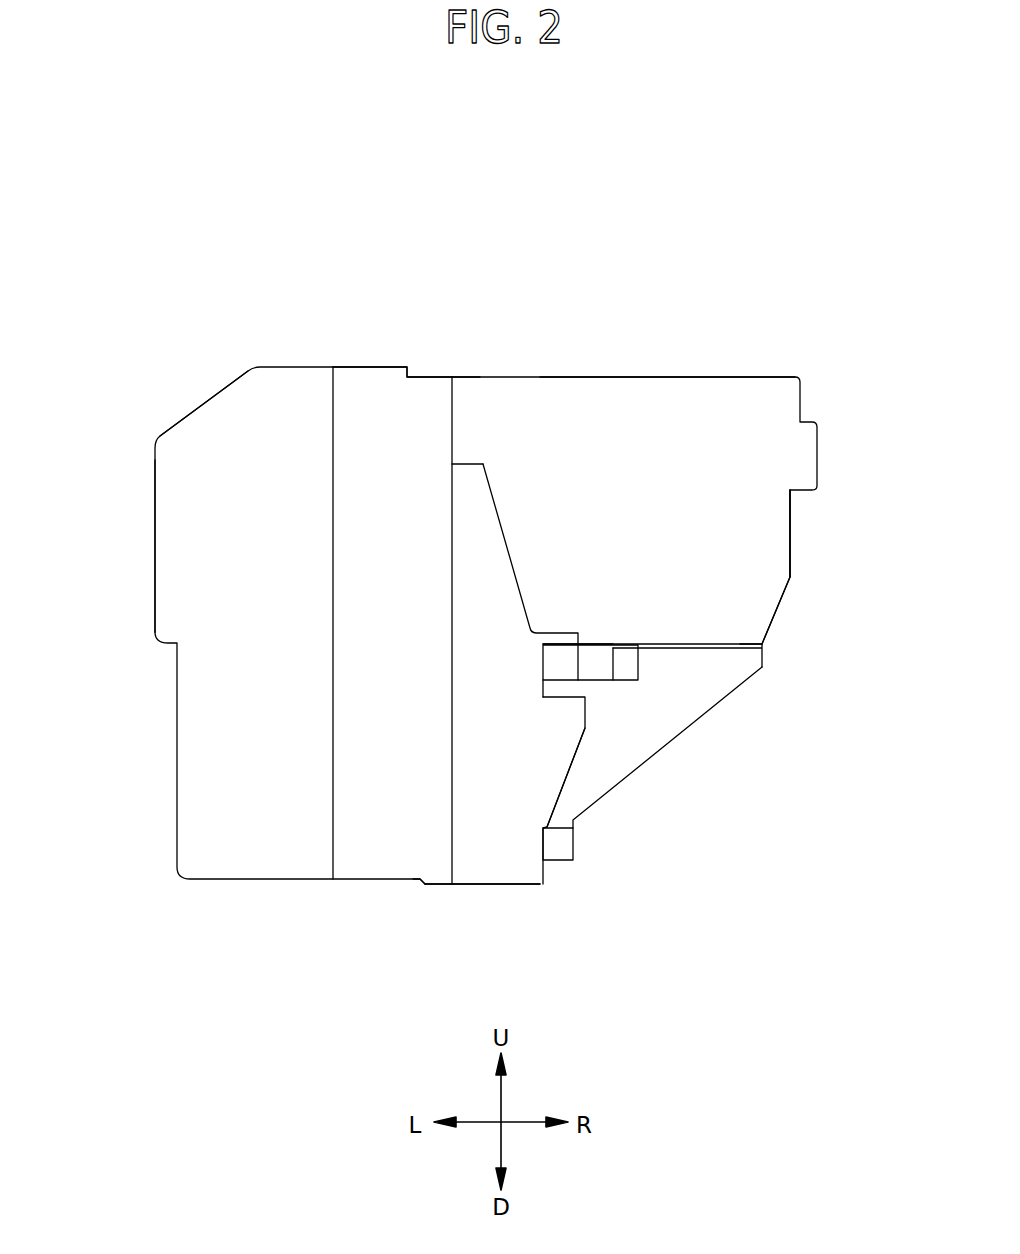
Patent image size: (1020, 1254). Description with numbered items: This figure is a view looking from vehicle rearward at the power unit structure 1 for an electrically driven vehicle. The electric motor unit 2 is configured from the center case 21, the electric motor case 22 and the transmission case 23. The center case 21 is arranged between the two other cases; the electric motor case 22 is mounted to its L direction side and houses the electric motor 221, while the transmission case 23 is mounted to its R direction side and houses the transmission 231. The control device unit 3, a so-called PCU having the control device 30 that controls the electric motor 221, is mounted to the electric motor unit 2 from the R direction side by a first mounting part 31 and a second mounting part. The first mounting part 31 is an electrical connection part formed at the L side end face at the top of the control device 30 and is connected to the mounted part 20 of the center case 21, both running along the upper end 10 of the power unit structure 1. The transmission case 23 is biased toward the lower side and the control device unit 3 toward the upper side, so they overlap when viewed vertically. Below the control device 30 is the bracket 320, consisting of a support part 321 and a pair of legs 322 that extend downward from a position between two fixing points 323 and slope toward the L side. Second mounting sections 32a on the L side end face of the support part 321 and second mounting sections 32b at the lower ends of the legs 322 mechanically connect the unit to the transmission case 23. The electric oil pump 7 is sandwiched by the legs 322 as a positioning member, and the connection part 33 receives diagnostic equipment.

The power unit structure 1 is at (603, 200).
The electric motor unit 2 is at (335, 330).
The control device unit 3 is at (690, 330).
The electric oil pump 7 is at (540, 753).
The upper end 10 is at (515, 360).
The mounted part 20 is at (473, 390).
The center case 21 is at (385, 385).
The electric motor case 22 is at (243, 445).
The electric motor 221 is at (213, 607).
The transmission case 23 is at (482, 835).
The transmission 231 is at (470, 785).
The control device 30 is at (628, 390).
The first mounting part 31 is at (452, 390).
The second mounting section 32a is at (543, 670).
The second mounting section 32b is at (545, 860).
The bracket 320 is at (640, 710).
The support part 321 is at (725, 655).
The leg 322 is at (588, 792).
The fixing point 323 is at (595, 643).
The connection part 33 is at (665, 592).